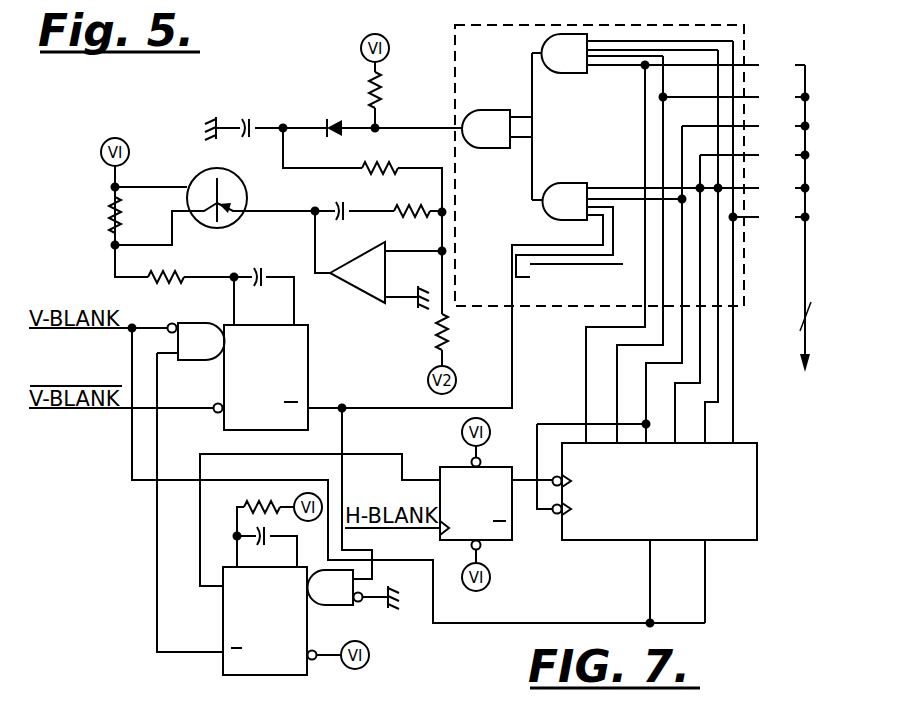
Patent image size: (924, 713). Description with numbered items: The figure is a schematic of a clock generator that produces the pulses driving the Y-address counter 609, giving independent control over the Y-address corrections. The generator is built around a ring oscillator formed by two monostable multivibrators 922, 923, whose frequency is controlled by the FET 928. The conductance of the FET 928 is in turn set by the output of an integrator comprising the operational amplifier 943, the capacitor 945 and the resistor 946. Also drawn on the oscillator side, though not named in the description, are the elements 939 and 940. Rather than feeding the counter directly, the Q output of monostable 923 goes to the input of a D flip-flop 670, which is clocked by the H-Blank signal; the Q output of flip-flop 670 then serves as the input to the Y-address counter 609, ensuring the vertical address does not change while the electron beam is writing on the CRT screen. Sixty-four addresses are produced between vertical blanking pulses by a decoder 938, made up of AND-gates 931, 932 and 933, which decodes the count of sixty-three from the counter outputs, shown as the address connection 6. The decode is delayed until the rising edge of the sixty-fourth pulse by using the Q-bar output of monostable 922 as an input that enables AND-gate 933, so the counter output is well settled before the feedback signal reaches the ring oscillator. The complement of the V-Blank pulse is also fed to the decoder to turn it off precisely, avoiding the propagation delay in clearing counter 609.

The FET 928 is at (208, 170).
The capacitor 939 is at (250, 122).
The diode 940 is at (333, 134).
The capacitor 945 is at (335, 203).
The resistor 946 is at (414, 205).
The operational amplifier 943 is at (374, 295).
The monostable multivibrator 922 is at (308, 370).
The monostable multivibrator 923 is at (223, 663).
The D flip-flop 670 is at (490, 542).
The Y-address counter 609 is at (735, 541).
The decoder 938 is at (630, 153).
The AND-gate 931 is at (505, 110).
The AND-gate 932 is at (543, 40).
The AND-gate 933 is at (563, 184).
The address bus 6 is at (737, 213).